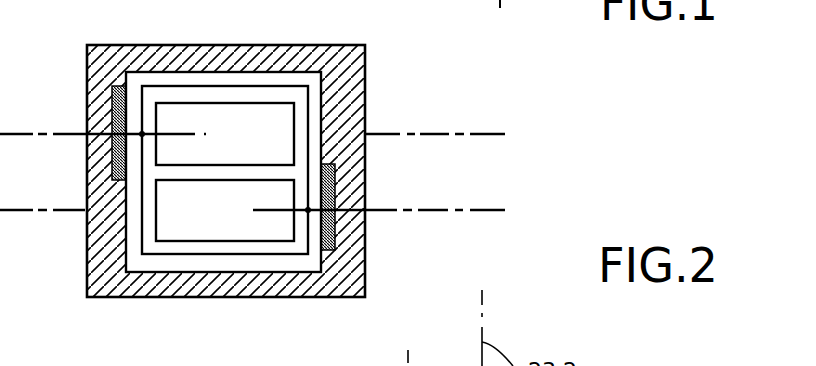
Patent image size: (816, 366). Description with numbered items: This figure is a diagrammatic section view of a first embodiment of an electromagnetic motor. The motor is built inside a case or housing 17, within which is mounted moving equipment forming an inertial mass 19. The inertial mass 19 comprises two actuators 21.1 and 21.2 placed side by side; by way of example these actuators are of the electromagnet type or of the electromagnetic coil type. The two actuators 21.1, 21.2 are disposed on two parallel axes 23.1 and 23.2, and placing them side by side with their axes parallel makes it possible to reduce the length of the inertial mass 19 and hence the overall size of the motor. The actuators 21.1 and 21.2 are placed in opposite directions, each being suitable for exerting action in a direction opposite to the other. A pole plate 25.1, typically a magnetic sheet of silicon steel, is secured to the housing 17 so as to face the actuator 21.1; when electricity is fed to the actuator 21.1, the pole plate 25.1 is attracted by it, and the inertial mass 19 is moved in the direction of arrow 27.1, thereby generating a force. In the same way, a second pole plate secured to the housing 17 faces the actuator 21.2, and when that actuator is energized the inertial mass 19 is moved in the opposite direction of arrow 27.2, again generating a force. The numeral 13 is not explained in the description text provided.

The housing 13 is at (255, 34).
The housing 17 is at (289, 43).
The inertial mass 19 is at (160, 254).
The actuator 21.1 is at (277, 144).
The actuator 21.2 is at (226, 223).
The axis 23.1 is at (439, 134).
The axis 23.2 is at (430, 215).
The pole plate 25.1 is at (112, 128).
The arrow 27.1 is at (177, 133).
The arrow 27.2 is at (271, 212).